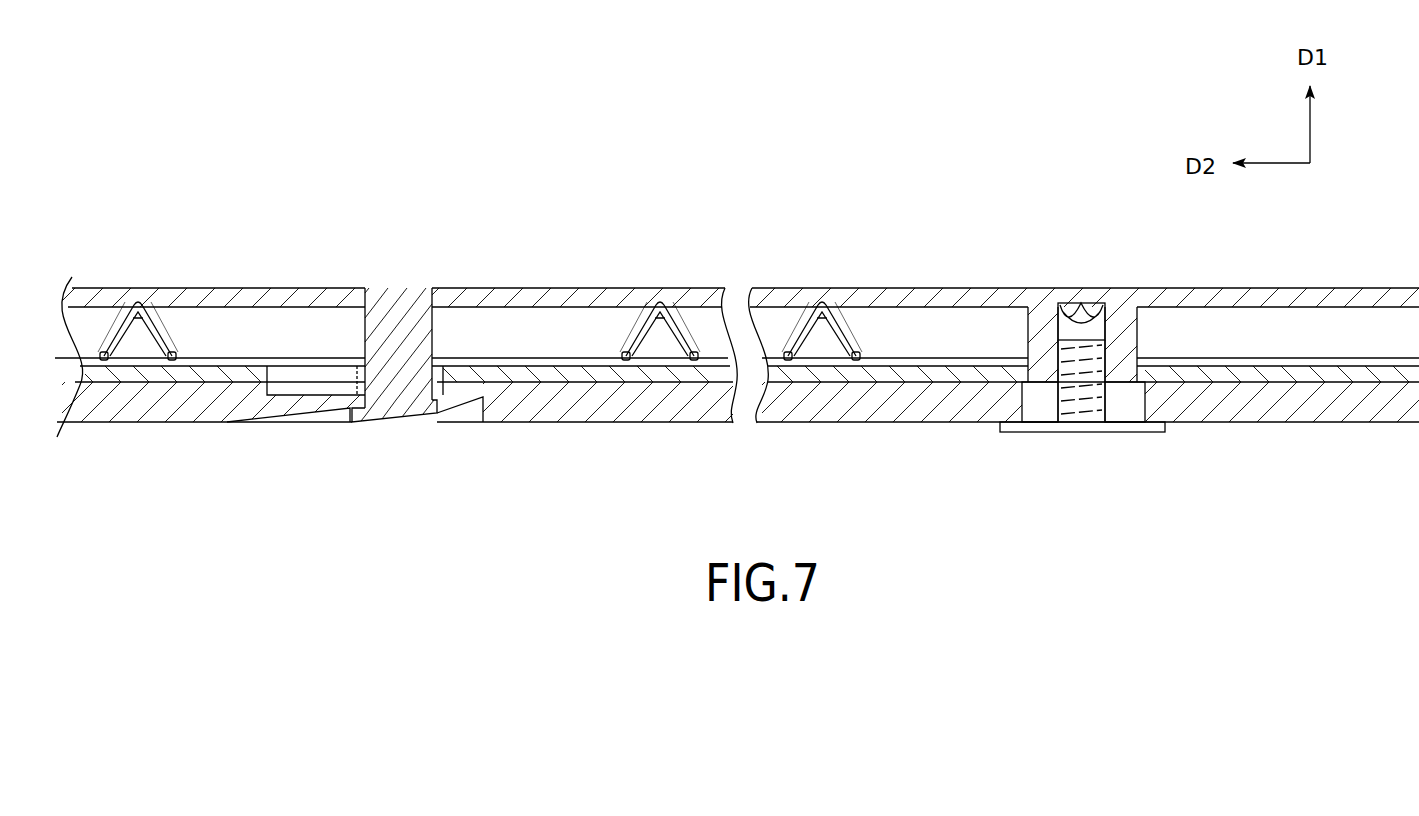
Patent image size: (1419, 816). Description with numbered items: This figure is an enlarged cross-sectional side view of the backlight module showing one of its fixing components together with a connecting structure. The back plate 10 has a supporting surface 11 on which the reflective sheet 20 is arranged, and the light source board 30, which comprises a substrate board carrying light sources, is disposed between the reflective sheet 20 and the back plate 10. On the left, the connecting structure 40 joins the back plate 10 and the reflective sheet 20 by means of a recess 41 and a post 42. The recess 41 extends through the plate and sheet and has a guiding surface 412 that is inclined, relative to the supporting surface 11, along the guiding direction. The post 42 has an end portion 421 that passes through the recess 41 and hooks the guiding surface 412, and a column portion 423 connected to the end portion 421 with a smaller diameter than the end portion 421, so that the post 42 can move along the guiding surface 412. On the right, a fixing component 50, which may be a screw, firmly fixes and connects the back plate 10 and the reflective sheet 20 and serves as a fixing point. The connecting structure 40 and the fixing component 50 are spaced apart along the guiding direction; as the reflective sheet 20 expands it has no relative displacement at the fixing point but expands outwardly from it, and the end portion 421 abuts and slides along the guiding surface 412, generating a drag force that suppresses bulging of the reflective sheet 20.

The back plate 10 is at (679, 430).
The supporting surface 11 is at (587, 378).
The reflective sheet 20 is at (992, 288).
The light source board 30 is at (850, 380).
The connecting structure 40 is at (348, 377).
The recess 41 is at (462, 432).
The guiding surface 412 is at (311, 424).
The post 42 is at (395, 367).
The end portion 421 is at (378, 424).
The column portion 423 is at (383, 338).
The fixing component 50 is at (1123, 433).